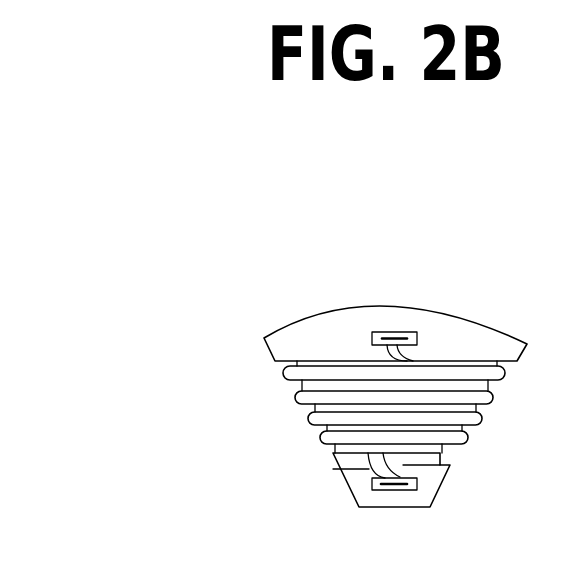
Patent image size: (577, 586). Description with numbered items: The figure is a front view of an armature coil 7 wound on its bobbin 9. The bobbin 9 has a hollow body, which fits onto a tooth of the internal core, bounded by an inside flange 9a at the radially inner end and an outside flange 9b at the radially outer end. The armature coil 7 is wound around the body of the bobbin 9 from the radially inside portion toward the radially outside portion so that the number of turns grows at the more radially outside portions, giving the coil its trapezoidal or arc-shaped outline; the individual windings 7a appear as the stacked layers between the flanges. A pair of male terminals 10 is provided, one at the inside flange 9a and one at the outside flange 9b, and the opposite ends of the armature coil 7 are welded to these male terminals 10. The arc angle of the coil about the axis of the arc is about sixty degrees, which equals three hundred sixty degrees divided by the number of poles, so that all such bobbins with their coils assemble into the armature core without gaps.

The armature coil 7 is at (522, 370).
The layer of stacked element 7a is at (308, 397).
The bobbin 9 is at (272, 329).
The inside flange 9a is at (435, 480).
The outside flange 9b is at (481, 341).
The male terminals 10 is at (397, 331).